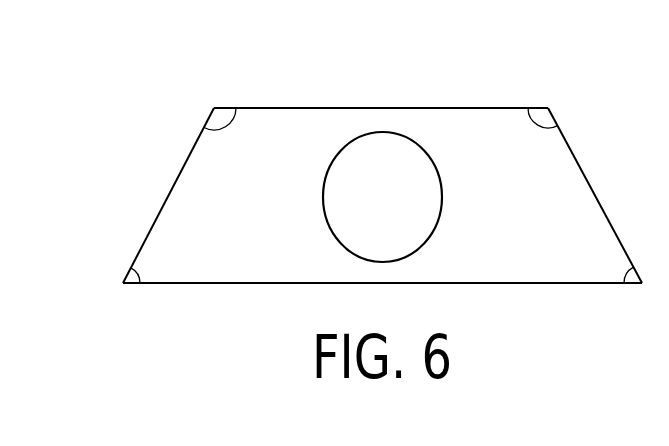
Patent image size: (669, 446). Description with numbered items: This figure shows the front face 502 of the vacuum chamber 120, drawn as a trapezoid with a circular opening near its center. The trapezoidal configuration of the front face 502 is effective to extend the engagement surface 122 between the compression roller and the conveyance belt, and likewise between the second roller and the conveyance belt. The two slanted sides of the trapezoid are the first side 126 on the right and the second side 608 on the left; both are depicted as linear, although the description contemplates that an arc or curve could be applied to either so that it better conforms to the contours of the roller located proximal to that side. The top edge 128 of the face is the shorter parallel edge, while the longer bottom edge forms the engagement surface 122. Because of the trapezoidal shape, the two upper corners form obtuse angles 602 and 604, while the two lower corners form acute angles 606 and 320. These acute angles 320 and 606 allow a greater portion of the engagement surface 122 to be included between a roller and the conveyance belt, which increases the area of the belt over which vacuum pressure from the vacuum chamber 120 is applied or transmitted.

The vacuum chamber 120 is at (177, 87).
The engagement surface 122 is at (533, 284).
The first side 126 is at (597, 198).
The top edge 128 is at (383, 108).
The acute angle 320 is at (625, 270).
The front face 502 is at (522, 225).
The obtuse angle 602 is at (234, 113).
The obtuse angle 604 is at (540, 128).
The acute angle 606 is at (140, 270).
The second side 608 is at (173, 185).